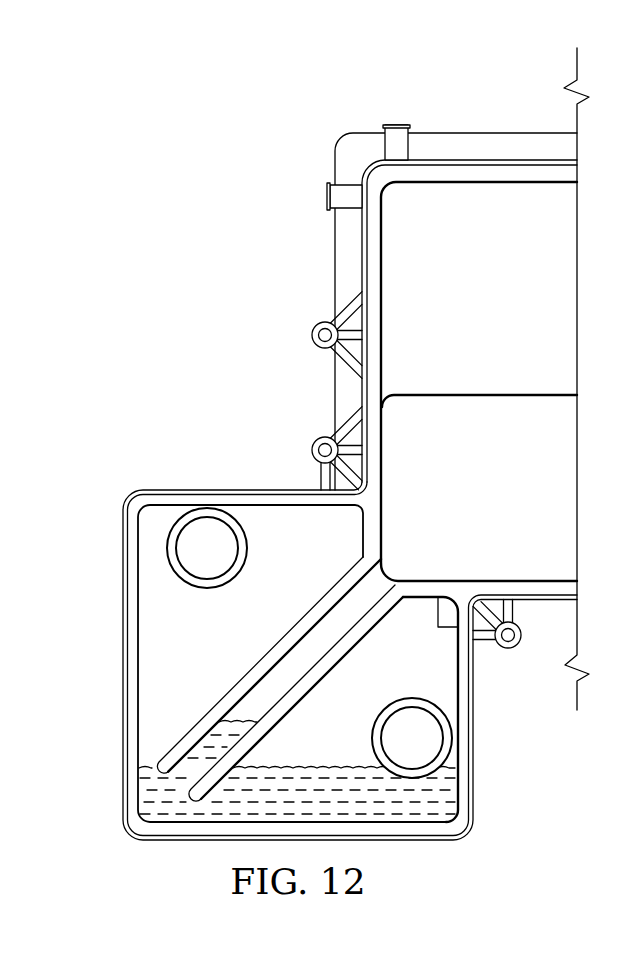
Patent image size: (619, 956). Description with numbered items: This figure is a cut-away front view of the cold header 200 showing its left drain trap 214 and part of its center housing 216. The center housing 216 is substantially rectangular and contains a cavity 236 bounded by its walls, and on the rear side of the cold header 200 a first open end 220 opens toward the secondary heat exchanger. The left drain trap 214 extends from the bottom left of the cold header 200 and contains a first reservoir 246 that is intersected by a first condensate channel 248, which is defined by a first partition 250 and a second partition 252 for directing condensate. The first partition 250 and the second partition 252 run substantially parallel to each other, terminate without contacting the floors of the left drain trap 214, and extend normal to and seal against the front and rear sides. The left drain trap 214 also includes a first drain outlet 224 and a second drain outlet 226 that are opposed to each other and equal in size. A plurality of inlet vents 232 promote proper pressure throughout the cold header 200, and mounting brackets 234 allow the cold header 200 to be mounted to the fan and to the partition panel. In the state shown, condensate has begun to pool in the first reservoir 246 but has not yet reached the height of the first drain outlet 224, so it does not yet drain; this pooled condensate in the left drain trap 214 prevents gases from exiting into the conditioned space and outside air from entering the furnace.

The cold header 200 is at (122, 178).
The left drain trap 214 is at (186, 484).
The center housing 216 is at (356, 274).
The first open end 220 is at (488, 397).
The first drain outlet 224 is at (372, 740).
The second drain outlet 226 is at (205, 588).
The inlet vents 232 is at (397, 123).
The mounting brackets 234 is at (312, 337).
The cavity 236 is at (497, 196).
The first reservoir 246 is at (266, 524).
The first condensate channel 248 is at (250, 718).
The first partition 250 is at (343, 663).
The second partition 252 is at (297, 620).